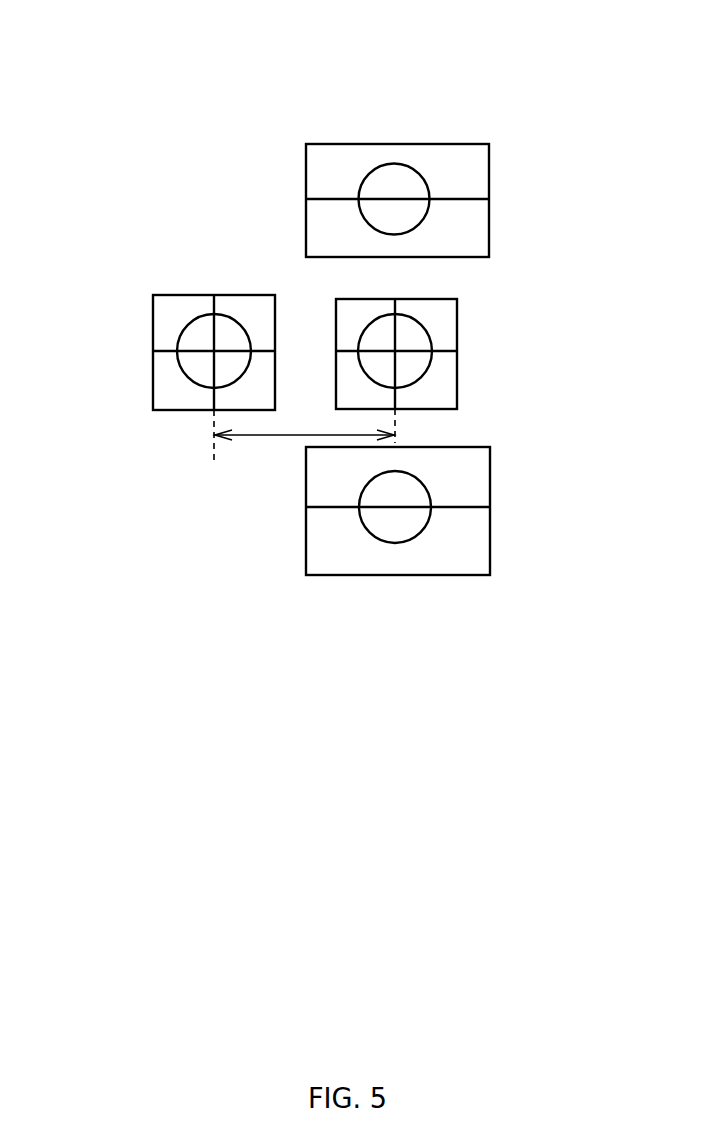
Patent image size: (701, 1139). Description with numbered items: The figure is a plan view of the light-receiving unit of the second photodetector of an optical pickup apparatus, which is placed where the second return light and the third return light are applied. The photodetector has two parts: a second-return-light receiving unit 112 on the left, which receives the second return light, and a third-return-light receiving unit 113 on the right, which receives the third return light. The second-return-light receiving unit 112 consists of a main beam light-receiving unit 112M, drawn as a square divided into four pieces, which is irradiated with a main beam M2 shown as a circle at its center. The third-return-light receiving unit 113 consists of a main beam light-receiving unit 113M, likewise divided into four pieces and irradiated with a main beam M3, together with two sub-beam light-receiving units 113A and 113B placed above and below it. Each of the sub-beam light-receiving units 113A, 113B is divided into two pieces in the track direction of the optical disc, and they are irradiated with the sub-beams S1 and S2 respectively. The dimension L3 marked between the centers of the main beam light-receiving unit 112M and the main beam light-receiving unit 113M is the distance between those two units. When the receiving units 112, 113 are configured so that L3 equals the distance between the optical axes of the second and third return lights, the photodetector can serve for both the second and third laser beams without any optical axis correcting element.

The second-return-light receiving unit 112 is at (207, 182).
The main beam light-receiving unit 112M is at (153, 323).
The main beam M2 is at (183, 375).
The third-return-light receiving unit 113 is at (428, 110).
The sub-beam light-receiving unit 113A is at (489, 188).
The sub-beam light-receiving unit 113B is at (490, 536).
The main beam light-receiving unit 113M is at (457, 378).
The main beam M3 is at (436, 337).
The sub-beam S1 is at (427, 177).
The sub-beam S2 is at (430, 491).
The distance between main beam light-receiving units L3 is at (304, 437).